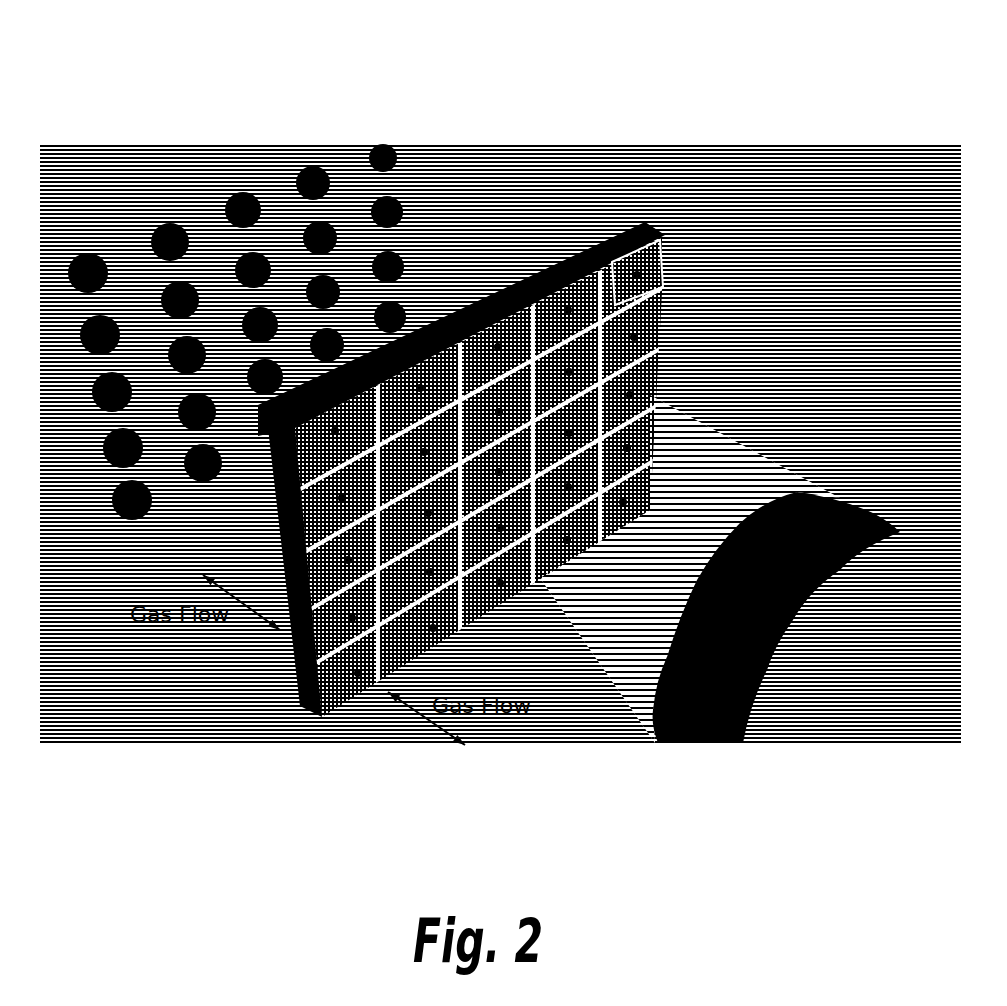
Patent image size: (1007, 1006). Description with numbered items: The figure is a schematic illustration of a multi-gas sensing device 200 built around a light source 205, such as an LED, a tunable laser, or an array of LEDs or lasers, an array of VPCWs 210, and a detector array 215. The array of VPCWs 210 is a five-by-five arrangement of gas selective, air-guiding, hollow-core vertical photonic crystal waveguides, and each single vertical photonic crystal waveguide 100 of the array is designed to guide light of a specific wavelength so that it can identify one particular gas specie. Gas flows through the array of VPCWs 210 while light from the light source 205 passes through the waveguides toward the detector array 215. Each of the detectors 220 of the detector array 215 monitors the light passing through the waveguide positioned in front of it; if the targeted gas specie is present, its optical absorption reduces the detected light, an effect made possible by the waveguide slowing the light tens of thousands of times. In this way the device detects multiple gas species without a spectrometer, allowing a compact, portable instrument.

The gas sensing device 200 is at (700, 133).
The light source 205 is at (863, 675).
The array of VPCWs 210 is at (677, 355).
The detector array 215 is at (418, 195).
The detector 220 is at (253, 217).
The single vertical photonic crystal waveguide 100 is at (652, 265).